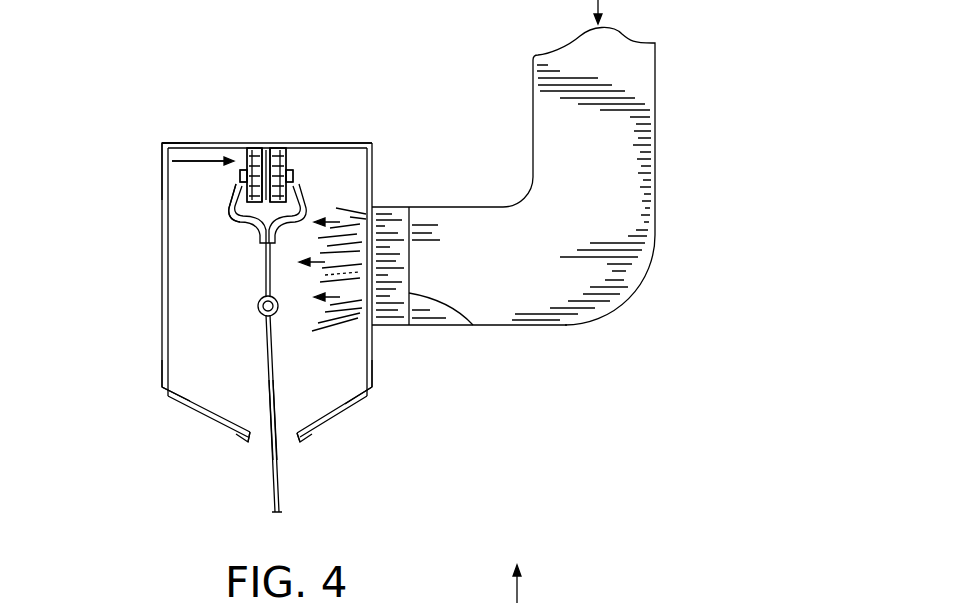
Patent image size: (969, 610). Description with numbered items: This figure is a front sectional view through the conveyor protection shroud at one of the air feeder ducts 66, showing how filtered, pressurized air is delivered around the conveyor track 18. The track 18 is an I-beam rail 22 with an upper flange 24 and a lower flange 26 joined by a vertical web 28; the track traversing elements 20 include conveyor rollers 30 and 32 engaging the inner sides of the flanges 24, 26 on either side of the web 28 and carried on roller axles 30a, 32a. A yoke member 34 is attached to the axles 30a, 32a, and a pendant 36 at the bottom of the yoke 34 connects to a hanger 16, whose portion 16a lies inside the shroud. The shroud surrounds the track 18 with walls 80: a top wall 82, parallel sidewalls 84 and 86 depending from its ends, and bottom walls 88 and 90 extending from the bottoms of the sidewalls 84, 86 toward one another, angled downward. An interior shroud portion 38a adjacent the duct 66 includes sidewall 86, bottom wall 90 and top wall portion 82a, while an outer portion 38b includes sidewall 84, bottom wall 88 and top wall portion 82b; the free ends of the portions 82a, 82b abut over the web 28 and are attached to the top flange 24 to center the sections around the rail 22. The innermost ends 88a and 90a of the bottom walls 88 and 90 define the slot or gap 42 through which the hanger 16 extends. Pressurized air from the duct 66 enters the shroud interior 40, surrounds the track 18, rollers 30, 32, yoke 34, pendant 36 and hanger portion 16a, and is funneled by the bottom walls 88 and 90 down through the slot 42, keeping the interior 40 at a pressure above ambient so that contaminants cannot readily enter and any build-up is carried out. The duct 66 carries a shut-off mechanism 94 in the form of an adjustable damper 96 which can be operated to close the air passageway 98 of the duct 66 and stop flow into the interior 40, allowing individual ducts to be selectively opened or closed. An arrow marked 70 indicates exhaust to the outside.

The hanger 16 is at (264, 474).
The portion of the hanger 16a is at (270, 378).
The track 18 is at (166, 145).
The track traversing elements 20 is at (300, 147).
The I-beam rail 22 is at (265, 147).
The upper flange 24 is at (248, 147).
The lower flange 26 is at (232, 205).
The web 28 is at (278, 147).
The conveyor roller 30 is at (241, 147).
The roller axle 30a is at (238, 177).
The conveyor roller 32 is at (287, 147).
The mounting tab end 32a is at (300, 164).
The yoke member 34 is at (232, 212).
The pendant 36 is at (258, 306).
The interior portion of the shroud 38a is at (389, 387).
The outer portion of the shroud 38b is at (141, 386).
The shroud interior 40 is at (190, 229).
The slot 42 is at (258, 449).
The air feeder duct 66 is at (525, 326).
The exhaust outlet 70 is at (476, 609).
The shroud walls 80 is at (152, 169).
The top wall 82 is at (197, 143).
The top wall portion 82a is at (340, 145).
The top wall portion 82b is at (185, 143).
The sidewall 84 is at (165, 255).
The sidewall 86 is at (372, 366).
The bottom wall 88 is at (212, 417).
The innermost end of bottom wall 88a is at (232, 437).
The bottom wall 90 is at (330, 412).
The innermost end of bottom wall 90a is at (301, 445).
The shut-off mechanism 94 is at (437, 223).
The adjustable damper 96 is at (472, 326).
The air passageway 98 is at (398, 210).